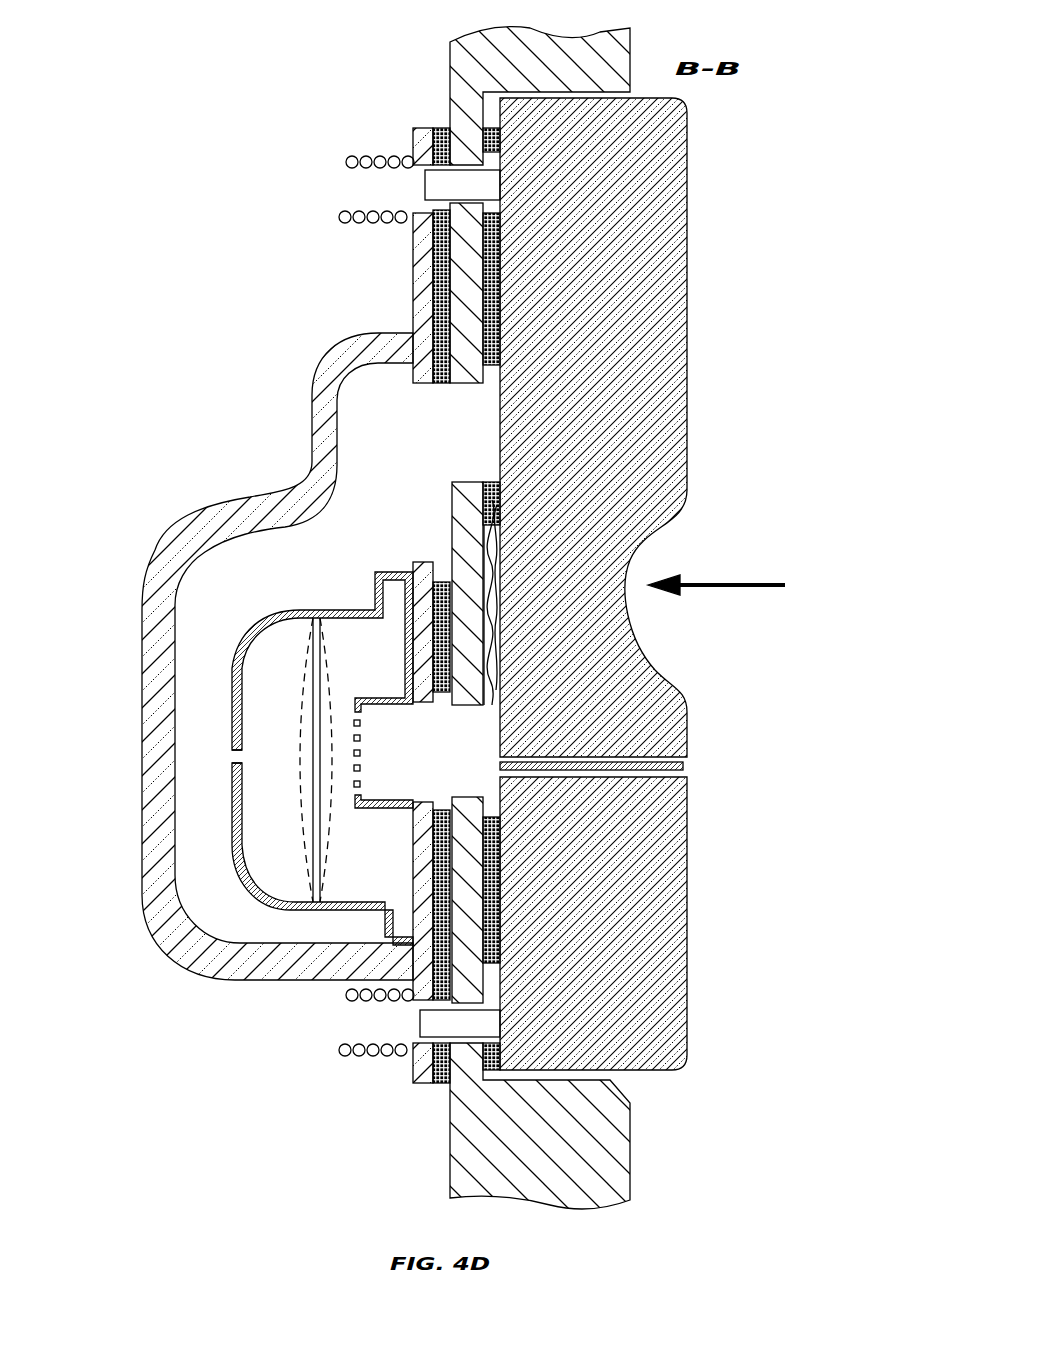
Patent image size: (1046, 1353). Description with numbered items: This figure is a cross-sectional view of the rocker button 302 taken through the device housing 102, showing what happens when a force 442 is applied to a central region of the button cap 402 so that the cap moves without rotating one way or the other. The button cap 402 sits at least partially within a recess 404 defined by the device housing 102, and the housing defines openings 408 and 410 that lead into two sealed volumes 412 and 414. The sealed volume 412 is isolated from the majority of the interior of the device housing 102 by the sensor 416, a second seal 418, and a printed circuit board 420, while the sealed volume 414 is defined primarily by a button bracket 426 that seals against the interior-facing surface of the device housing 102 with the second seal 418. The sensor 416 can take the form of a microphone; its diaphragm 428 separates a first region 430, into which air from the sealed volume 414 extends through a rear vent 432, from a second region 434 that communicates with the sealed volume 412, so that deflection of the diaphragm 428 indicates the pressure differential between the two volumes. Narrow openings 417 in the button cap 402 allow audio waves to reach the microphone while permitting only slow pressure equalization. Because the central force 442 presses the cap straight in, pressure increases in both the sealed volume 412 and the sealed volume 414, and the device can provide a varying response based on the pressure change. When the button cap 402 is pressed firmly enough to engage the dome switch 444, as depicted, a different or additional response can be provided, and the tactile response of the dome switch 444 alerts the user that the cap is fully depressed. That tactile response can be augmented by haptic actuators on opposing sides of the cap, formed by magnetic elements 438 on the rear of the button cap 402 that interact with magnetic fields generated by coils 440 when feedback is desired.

The rocker button 302 is at (174, 98).
The device housing 102 is at (559, 1153).
The button cap 402 is at (609, 375).
The recess 404 is at (628, 1083).
The opening 408 is at (475, 733).
The opening 410 is at (475, 393).
The sealed volume 412 is at (412, 766).
The sealed volume 414 is at (404, 445).
The sensor 416 is at (286, 610).
The narrow opening 417 is at (702, 768).
The second seal 418 is at (448, 308).
The printed circuit board 420 is at (410, 562).
The button bracket 426 is at (178, 507).
The diaphragm 428 is at (322, 854).
The first region 430 is at (389, 671).
The rear vent 432 is at (222, 742).
The second region 434 is at (292, 681).
The magnetic element 438 is at (487, 195).
The coil 440 is at (339, 213).
The force 442 is at (716, 571).
The dome switch 444 is at (487, 520).